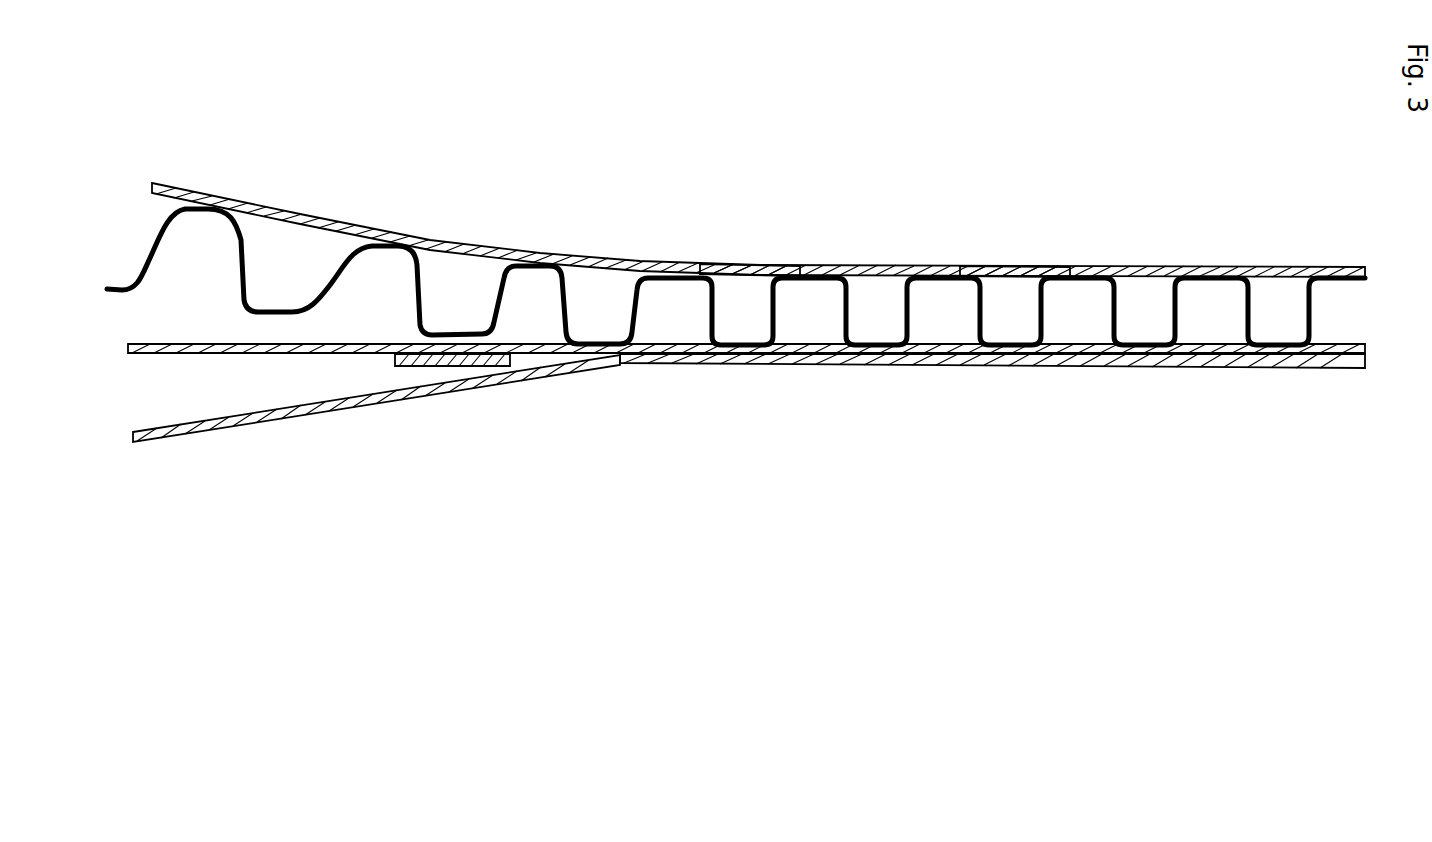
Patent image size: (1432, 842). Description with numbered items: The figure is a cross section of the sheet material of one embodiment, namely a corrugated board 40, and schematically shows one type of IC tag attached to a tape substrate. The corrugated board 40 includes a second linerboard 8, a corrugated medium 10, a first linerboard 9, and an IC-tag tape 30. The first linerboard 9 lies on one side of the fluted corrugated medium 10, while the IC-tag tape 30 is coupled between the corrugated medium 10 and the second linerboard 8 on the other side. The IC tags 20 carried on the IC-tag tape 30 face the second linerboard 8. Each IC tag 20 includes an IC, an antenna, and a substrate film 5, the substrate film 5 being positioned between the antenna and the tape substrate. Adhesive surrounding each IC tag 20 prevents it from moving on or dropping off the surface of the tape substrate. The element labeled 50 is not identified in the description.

The upper heating plate 50 is at (323, 216).
The first linerboard 9 is at (746, 262).
The corrugated board 40 is at (1012, 266).
The corrugated medium 10 is at (563, 300).
The IC-tag tape 30 is at (192, 343).
The substrate film 5 is at (402, 355).
The IC tag 20 is at (460, 367).
The second linerboard 8 is at (682, 368).